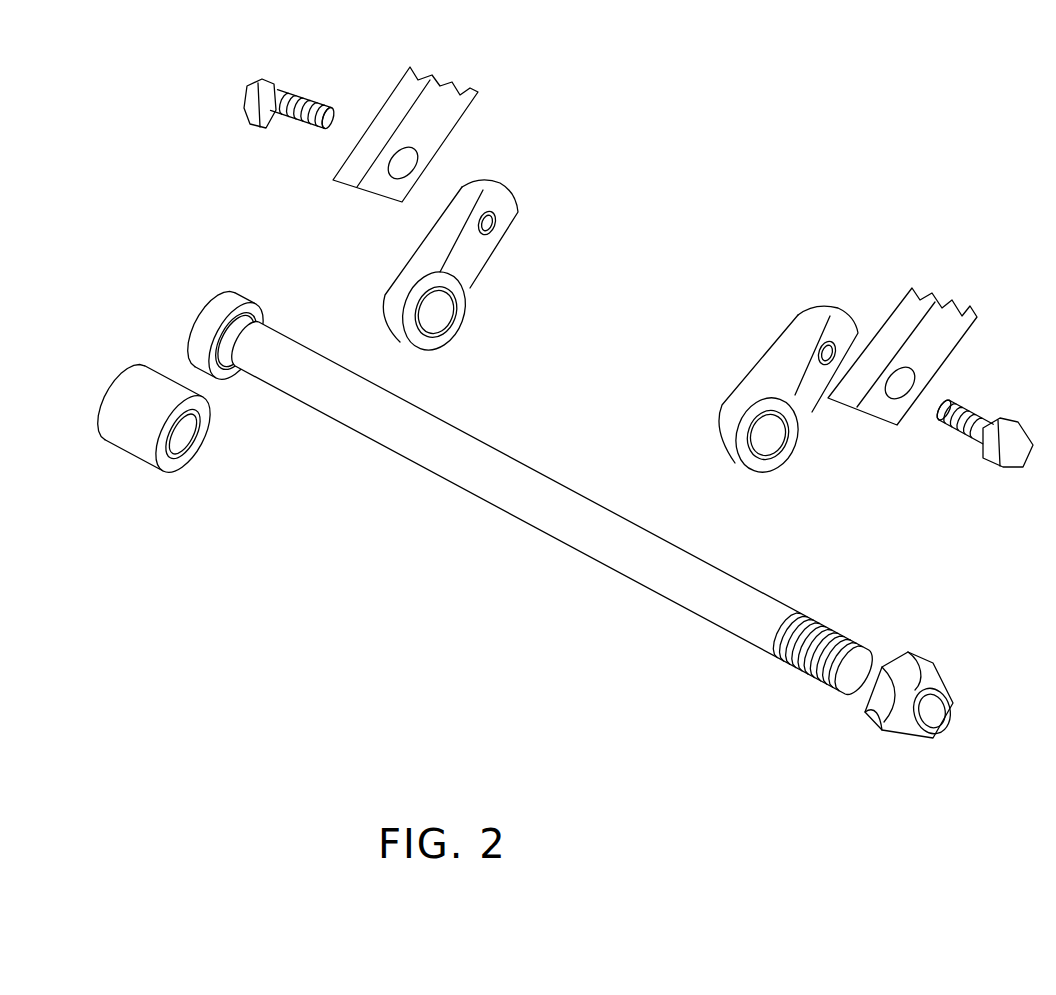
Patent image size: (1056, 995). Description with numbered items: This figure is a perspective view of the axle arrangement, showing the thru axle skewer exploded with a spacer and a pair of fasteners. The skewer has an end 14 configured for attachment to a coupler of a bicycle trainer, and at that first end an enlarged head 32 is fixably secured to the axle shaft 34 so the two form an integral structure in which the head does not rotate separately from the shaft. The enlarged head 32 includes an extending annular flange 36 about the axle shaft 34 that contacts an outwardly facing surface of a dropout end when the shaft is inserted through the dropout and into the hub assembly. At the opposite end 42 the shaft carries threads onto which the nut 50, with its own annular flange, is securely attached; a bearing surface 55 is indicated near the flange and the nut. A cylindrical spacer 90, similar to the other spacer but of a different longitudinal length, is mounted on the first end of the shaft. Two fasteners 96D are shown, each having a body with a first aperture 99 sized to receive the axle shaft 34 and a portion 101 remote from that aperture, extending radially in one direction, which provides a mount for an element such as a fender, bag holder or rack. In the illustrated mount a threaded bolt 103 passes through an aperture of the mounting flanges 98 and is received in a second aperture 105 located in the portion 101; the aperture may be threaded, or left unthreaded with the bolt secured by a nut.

The end 14 is at (551, 437).
The enlarged head 32 is at (608, 437).
The axle shaft 34 is at (573, 466).
The annular flange 36 is at (273, 307).
The end 42 is at (873, 629).
The nut 50 is at (876, 726).
The bearing surface 55 is at (220, 286).
The spacer 90 is at (130, 460).
The fastener 96D is at (642, 338).
The mounting flanges 98 is at (468, 108).
The first aperture 99 is at (445, 327).
The portion 101 is at (507, 230).
The threaded bolt 103 is at (254, 90).
The second aperture 105 is at (492, 233).